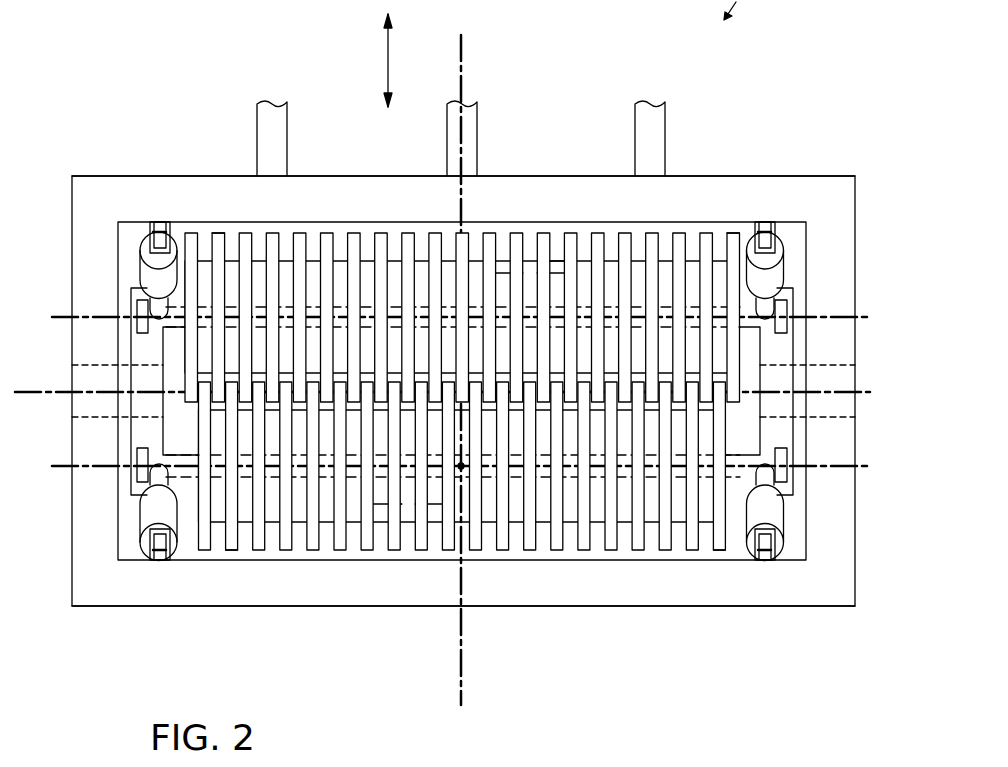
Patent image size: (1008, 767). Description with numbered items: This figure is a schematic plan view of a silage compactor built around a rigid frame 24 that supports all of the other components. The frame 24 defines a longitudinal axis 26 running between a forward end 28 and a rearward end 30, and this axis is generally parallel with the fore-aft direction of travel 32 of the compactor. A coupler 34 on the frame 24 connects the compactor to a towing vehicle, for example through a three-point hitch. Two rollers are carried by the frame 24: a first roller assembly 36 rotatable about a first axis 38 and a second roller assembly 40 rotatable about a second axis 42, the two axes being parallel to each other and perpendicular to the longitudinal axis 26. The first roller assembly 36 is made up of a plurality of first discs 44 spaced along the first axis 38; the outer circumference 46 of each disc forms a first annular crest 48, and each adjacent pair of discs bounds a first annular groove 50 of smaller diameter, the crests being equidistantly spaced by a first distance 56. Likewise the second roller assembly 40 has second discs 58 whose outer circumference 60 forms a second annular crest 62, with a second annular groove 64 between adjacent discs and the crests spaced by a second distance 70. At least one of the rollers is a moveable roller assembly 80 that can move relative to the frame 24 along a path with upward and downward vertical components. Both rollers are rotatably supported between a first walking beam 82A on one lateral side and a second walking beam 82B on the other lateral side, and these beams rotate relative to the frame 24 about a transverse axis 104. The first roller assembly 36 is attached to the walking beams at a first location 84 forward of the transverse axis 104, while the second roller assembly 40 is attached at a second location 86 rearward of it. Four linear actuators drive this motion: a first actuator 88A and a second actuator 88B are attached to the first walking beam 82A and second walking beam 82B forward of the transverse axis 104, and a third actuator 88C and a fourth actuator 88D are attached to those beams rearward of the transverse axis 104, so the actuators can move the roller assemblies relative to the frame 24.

The frame 24 is at (842, 197).
The longitudinal axis 26 is at (461, 51).
The forward end 28 is at (600, 176).
The rearward end 30 is at (571, 606).
The fore-aft direction of travel 32 is at (388, 64).
The coupler 34 is at (478, 125).
The first roller assembly 36 is at (538, 246).
The first axis 38 is at (860, 318).
The second roller assembly 40 is at (475, 533).
The second axis 42 is at (857, 466).
The first discs 44 is at (217, 247).
The outer circumference 46 is at (218, 233).
The first annular crest 48 is at (296, 233).
The first annular groove 50 is at (313, 260).
The first distance 56 is at (557, 262).
The second discs 58 is at (228, 533).
The outer circumference 60 is at (232, 551).
The second annular crest 62 is at (258, 550).
The second annular groove 64 is at (300, 523).
The second distance 70 is at (432, 508).
The moveable roller assembly 80 is at (453, 392).
The first walking beam 82A is at (152, 348).
The second walking beam 82B is at (778, 348).
The first location 84 is at (461, 316).
The second location 86 is at (461, 465).
The first actuator 88A is at (152, 276).
The second actuator 88B is at (763, 283).
The third actuator 88C is at (152, 513).
The fourth actuator 88D is at (773, 507).
The transverse axis 104 is at (22, 395).